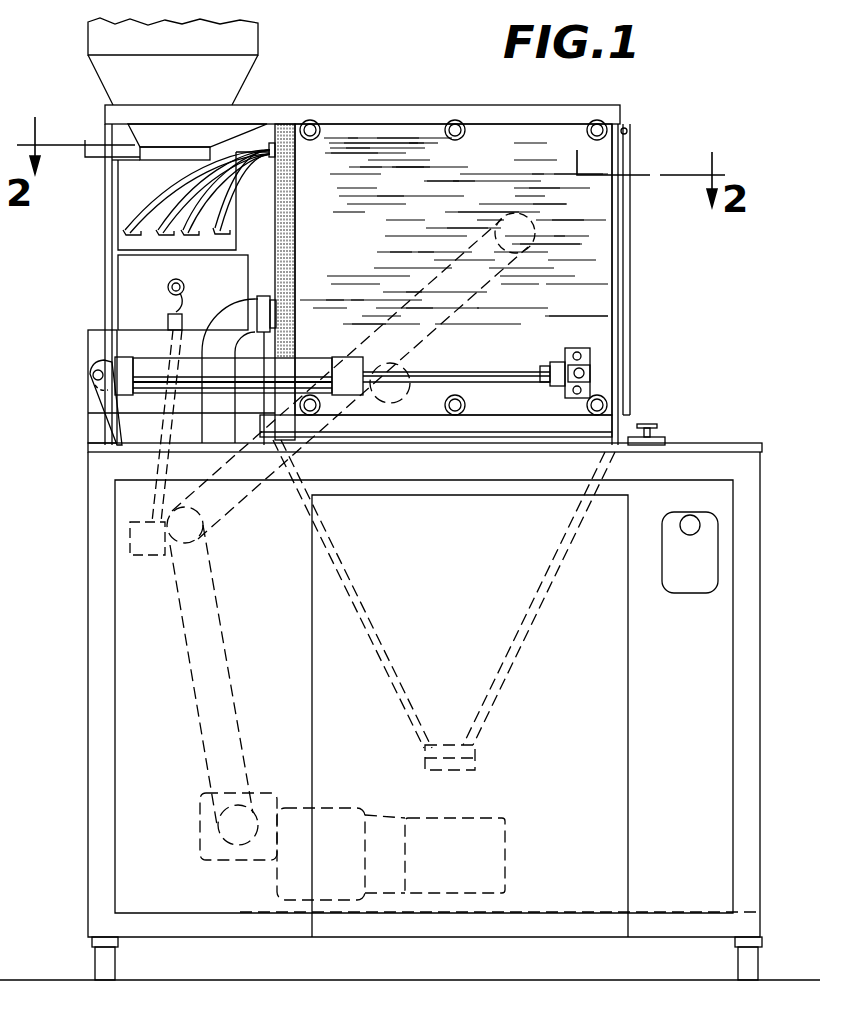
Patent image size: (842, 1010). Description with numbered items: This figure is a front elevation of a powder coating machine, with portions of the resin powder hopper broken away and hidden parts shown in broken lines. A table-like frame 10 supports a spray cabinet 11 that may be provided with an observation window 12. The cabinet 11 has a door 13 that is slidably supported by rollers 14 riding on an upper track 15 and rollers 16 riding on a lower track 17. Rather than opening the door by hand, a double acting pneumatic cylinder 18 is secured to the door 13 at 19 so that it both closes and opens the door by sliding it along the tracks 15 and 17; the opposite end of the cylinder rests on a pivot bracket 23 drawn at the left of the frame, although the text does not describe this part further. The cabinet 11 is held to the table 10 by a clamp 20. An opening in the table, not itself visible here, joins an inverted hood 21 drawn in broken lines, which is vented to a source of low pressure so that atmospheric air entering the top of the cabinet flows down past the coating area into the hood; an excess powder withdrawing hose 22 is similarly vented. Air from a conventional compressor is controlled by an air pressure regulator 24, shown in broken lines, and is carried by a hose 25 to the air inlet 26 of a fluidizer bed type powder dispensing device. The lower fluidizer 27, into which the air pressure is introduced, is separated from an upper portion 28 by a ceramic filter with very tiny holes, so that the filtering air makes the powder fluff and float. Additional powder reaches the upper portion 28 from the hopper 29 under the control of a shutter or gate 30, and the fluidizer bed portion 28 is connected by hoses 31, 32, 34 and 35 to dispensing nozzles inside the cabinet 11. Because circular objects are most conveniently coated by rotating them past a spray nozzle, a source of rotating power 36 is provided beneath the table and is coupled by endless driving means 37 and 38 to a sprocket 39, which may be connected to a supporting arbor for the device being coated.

The frame 10 is at (712, 445).
The spray cabinet 11 is at (392, 98).
The observation window 12 is at (632, 248).
The door 13 is at (590, 287).
The rollers 14 is at (453, 120).
The upper track 15 is at (278, 107).
The rollers 16 is at (466, 404).
The lower track 17 is at (610, 425).
The pneumatic cylinder 18 is at (310, 360).
The securing point 19 is at (590, 358).
The clamp 20 is at (655, 432).
The inverted hood 21 is at (537, 670).
The excess powder withdrawing hose 22 is at (233, 305).
The pivot bracket 23 is at (95, 415).
The air pressure regulator 24 is at (130, 536).
The hose 25 is at (160, 458).
The air inlet 26 is at (170, 282).
The fluidizer 27 is at (104, 273).
The upper portion 28 is at (118, 185).
The hopper 29 is at (113, 70).
The gate 30 is at (85, 157).
The hose 31 is at (143, 206).
The hose 32 is at (157, 225).
The hose 34 is at (177, 242).
The hose 35 is at (212, 224).
The source of rotating power 36 is at (338, 810).
The endless driving means 37 is at (250, 708).
The endless driving means 38 is at (442, 276).
The sprocket 39 is at (538, 233).